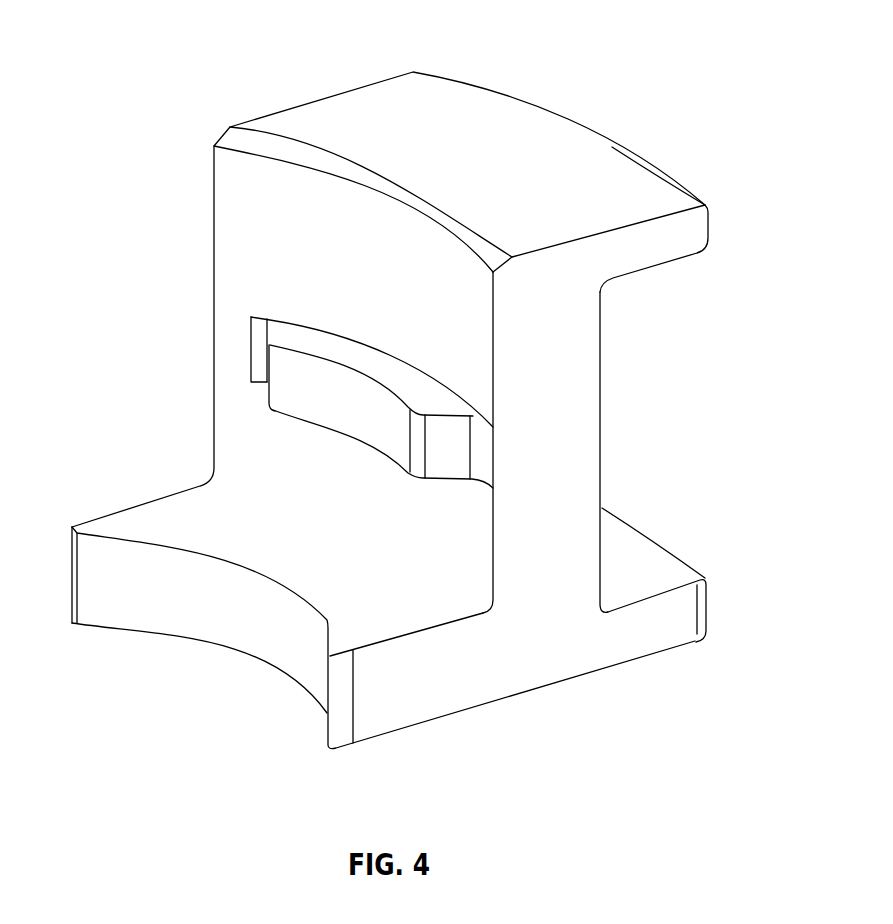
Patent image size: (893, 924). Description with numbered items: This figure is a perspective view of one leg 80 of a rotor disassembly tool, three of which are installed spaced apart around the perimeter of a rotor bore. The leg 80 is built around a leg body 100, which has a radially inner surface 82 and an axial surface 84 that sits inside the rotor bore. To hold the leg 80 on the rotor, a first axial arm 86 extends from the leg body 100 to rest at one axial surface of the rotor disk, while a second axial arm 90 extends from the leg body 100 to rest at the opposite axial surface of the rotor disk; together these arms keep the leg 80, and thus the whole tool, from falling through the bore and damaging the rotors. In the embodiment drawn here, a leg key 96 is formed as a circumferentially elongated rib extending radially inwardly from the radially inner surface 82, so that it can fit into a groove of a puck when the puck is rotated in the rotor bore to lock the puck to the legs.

The leg 80 is at (597, 190).
The radially inner surface 82 is at (228, 190).
The axial surface 84 is at (142, 525).
The first axial arm 86 is at (455, 102).
The second axial arm 90 is at (650, 632).
The leg key 96 is at (285, 370).
The leg body 100 is at (534, 560).